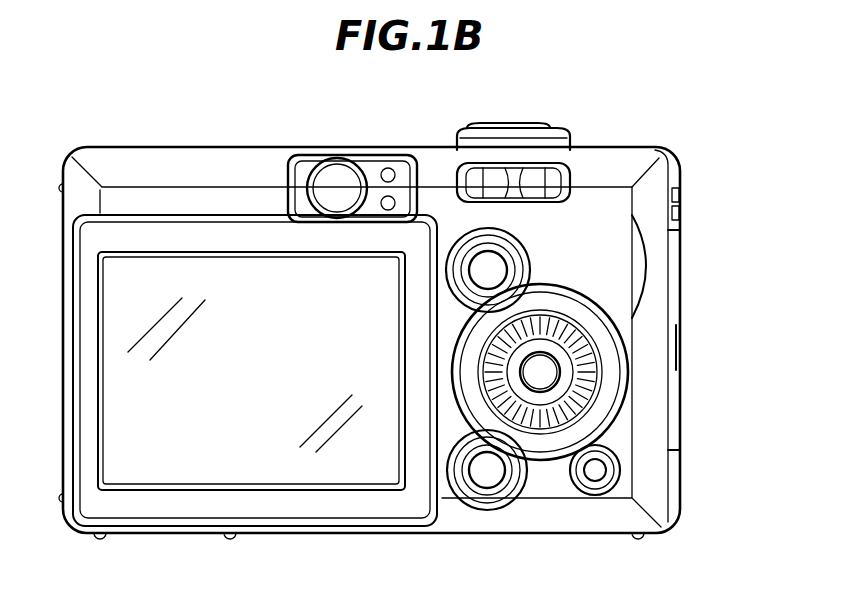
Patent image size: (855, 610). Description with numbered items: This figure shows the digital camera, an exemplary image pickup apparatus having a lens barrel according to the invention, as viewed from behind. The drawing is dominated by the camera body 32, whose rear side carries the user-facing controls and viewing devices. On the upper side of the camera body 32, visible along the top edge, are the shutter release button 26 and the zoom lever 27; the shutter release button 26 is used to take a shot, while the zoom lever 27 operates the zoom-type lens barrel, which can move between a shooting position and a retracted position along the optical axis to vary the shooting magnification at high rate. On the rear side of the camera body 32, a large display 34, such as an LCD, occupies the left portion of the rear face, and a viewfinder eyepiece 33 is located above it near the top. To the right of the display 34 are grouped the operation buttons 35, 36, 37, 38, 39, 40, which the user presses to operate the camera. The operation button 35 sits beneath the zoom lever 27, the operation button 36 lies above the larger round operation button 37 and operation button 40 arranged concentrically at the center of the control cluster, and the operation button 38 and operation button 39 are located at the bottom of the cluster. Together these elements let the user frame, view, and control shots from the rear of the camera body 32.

The shutter release button 26 is at (512, 127).
The zoom lever 27 is at (558, 140).
The camera body 32 is at (177, 162).
The viewfinder eyepiece 33 is at (333, 182).
The display 34 is at (327, 464).
The operation button 35 is at (541, 180).
The operation button 36 is at (490, 270).
The operation button 37 is at (547, 372).
The operation button 38 is at (487, 471).
The operation button 39 is at (596, 472).
The operation button 40 is at (588, 400).